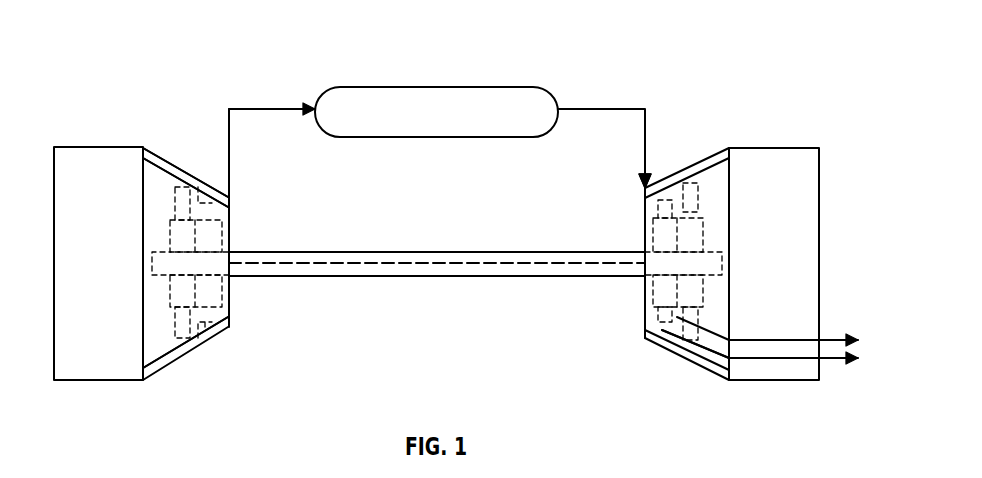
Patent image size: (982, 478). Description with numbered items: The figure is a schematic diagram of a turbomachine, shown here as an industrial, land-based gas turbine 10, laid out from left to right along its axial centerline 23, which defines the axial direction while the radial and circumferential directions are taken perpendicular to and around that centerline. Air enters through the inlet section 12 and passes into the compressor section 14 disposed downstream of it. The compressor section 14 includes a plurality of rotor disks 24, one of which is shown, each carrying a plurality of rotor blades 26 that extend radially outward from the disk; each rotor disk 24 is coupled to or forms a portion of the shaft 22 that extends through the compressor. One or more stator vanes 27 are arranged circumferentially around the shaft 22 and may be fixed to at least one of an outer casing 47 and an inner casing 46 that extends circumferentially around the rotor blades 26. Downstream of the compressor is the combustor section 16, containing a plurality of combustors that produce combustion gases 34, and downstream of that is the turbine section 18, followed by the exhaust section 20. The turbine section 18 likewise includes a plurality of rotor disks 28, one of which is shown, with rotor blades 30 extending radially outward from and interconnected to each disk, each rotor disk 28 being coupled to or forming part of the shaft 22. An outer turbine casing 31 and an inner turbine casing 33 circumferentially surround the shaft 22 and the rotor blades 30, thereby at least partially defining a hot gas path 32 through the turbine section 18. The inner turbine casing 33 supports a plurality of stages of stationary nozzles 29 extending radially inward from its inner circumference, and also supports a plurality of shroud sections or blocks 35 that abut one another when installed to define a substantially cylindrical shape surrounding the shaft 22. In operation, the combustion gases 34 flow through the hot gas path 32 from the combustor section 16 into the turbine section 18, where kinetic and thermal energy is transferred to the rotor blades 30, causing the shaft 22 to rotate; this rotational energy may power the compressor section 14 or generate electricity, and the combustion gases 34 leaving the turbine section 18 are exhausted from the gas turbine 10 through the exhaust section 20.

The gas turbine 10 is at (280, 50).
The inlet section 12 is at (72, 147).
The compressor section 14 is at (176, 160).
The combustor section 16 is at (495, 87).
The turbine section 18 is at (712, 152).
The exhaust section 20 is at (795, 148).
The shaft 22 is at (385, 276).
The axial centerline 23 is at (487, 263).
The rotor disk 24 is at (170, 235).
The rotor blade 26 is at (175, 195).
The stator vane 27 is at (225, 203).
The rotor disk 28 is at (672, 230).
The stationary nozzle 29 is at (700, 193).
The rotor blade 30 is at (665, 185).
The outer turbine casing 31 is at (710, 372).
The hot gas path 32 is at (706, 318).
The inner turbine casing 33 is at (645, 330).
The combustion gases 34 is at (590, 109).
The shroud block 35 is at (672, 352).
The inner casing 46 is at (167, 360).
The outer casing 47 is at (152, 153).